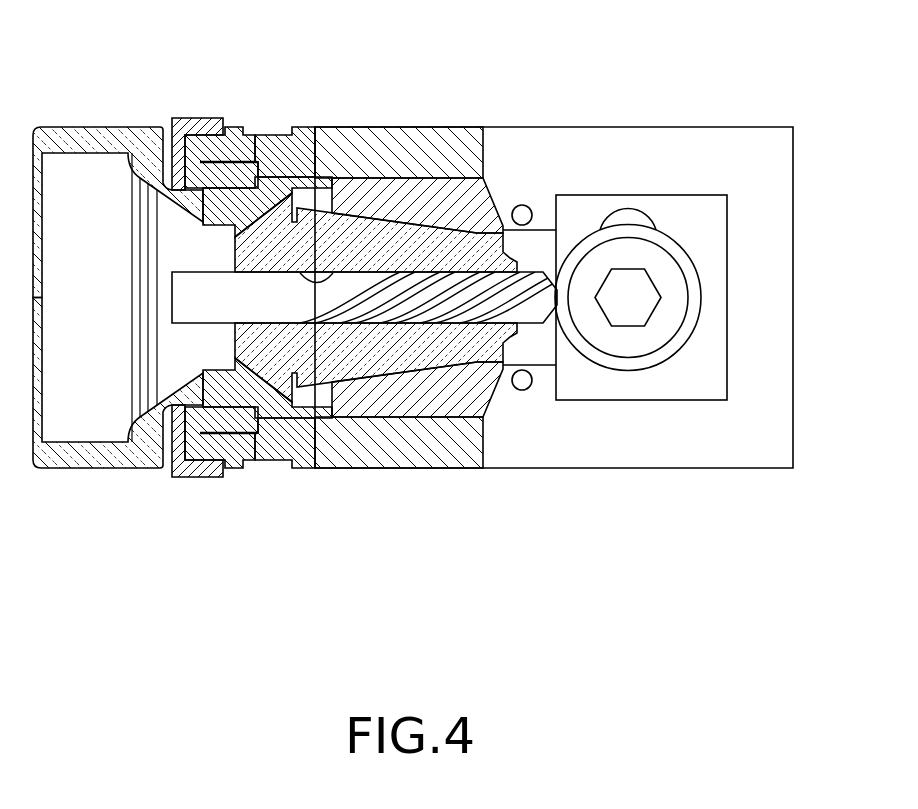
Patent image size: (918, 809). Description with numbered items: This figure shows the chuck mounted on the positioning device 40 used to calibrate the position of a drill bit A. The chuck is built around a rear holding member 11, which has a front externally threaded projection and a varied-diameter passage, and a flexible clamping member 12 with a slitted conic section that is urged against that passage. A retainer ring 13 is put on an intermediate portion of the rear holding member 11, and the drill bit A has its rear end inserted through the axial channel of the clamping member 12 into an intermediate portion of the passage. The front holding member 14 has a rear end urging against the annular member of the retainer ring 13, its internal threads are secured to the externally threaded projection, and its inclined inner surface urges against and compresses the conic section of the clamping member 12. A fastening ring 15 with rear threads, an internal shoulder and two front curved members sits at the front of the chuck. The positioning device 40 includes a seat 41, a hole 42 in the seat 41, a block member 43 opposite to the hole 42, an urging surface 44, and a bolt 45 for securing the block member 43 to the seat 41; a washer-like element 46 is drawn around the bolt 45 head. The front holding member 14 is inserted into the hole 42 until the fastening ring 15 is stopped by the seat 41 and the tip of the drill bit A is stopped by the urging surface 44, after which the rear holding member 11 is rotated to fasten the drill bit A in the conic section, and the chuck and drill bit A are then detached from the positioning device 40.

The rear holding member 11 is at (97, 137).
The flexible clamping member 12 is at (308, 385).
The retainer ring 13 is at (195, 115).
The front holding member 14 is at (378, 395).
The fastening ring 15 is at (248, 125).
The positioning device 40 is at (697, 497).
The seat 41 is at (515, 140).
The hole 42 is at (388, 182).
The block member 43 is at (305, 125).
The urging surface 44 is at (717, 295).
The bolt 45 is at (560, 280).
The washer 46 is at (667, 257).
The drill bit A is at (233, 415).